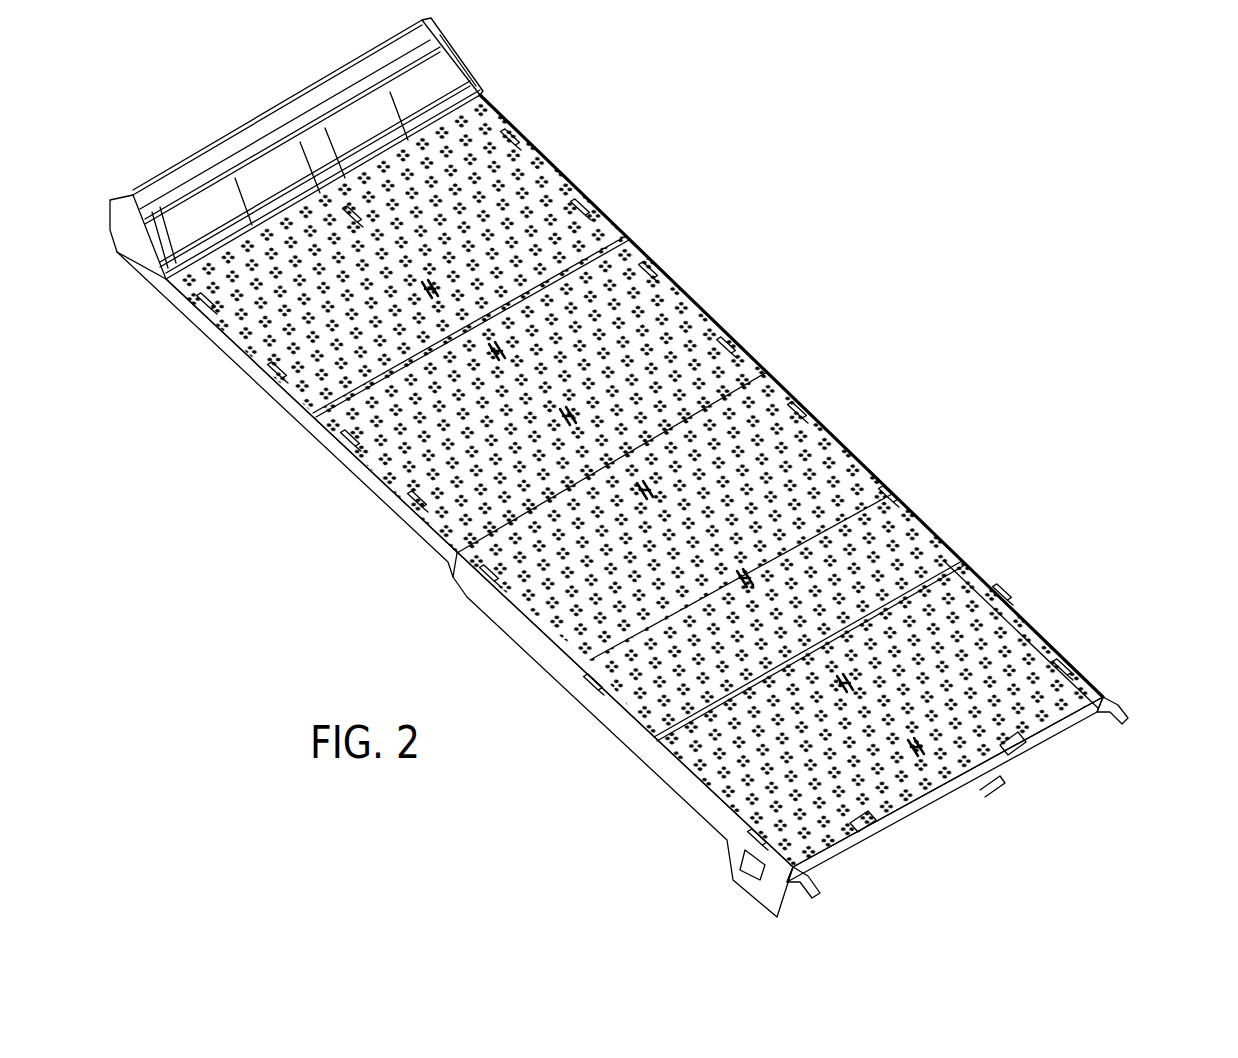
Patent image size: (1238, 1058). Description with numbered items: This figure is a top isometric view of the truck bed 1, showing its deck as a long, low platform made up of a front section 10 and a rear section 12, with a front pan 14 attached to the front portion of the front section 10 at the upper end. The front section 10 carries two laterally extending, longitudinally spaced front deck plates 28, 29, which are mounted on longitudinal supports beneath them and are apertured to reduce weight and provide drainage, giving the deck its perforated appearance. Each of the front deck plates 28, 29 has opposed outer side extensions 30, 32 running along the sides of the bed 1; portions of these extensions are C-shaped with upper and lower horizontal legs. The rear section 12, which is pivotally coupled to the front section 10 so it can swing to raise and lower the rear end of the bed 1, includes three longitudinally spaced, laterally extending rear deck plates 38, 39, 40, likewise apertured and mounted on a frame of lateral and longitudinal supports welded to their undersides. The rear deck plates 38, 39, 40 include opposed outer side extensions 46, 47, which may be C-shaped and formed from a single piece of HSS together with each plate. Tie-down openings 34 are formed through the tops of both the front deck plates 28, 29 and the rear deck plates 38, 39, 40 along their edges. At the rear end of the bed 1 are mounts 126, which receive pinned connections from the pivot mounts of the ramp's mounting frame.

The bed 1 is at (806, 392).
The front section 10 is at (618, 292).
The rear section 12 is at (930, 592).
The front pan 14 is at (375, 80).
The front deck plate 28 is at (463, 137).
The front deck plate 29 is at (385, 458).
The outer side extension 30 is at (275, 398).
The outer side extension 32 is at (507, 120).
The tie-down openings 34 is at (352, 213).
The rear deck plate 38 is at (826, 428).
The rear deck plate 39 is at (930, 560).
The rear deck plate 40 is at (1008, 652).
The outer side extension 46 is at (688, 776).
The outer side extension 47 is at (1072, 670).
The mounts 126 is at (1120, 720).